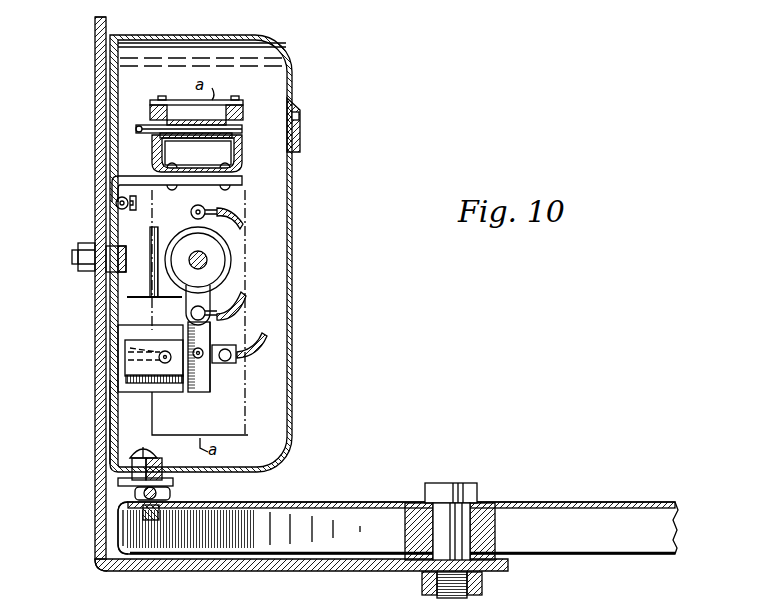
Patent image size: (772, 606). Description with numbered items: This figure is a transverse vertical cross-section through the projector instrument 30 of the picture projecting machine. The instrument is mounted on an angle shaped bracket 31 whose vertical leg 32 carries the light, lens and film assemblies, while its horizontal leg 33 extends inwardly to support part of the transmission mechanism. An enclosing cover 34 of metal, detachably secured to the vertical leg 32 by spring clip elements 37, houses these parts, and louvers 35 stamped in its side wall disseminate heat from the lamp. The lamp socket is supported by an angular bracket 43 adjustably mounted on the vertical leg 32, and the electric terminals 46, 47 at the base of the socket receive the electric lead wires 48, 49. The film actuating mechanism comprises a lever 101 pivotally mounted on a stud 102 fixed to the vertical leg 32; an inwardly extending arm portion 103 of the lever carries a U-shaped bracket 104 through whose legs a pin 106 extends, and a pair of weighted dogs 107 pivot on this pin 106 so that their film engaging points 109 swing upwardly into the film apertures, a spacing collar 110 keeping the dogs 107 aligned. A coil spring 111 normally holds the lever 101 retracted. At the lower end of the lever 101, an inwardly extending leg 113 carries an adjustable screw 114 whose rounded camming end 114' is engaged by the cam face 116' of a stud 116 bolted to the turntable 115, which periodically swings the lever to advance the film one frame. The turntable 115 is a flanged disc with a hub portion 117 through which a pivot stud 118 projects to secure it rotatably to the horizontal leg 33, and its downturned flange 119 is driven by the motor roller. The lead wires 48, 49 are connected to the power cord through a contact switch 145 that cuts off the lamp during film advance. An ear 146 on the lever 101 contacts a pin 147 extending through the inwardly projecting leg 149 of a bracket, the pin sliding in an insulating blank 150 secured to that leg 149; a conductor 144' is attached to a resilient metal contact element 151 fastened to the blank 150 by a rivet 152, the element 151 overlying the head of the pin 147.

The projector instrument 30 is at (342, 182).
The angle shaped bracket 31 is at (100, 575).
The vertical leg 32 is at (100, 314).
The horizontal leg 33 is at (342, 572).
The enclosing cover 34 is at (292, 63).
The louvers 35 is at (300, 148).
The spring clip elements 37 is at (95, 28).
The angular bracket 43 is at (233, 257).
The electric terminal 46 is at (217, 210).
The electric terminal 47 is at (208, 300).
The electric lead wire 48 is at (237, 221).
The electric lead wire 49 is at (245, 292).
The lever 101 is at (112, 410).
The stud 102 is at (77, 258).
The arm portion 103 is at (118, 177).
The U-shaped bracket 104 is at (152, 152).
The pin 106 is at (136, 129).
The weighted dogs 107 is at (150, 118).
The film engaging point 109 is at (160, 97).
The spacing collar 110 is at (218, 148).
The coil spring 111 is at (116, 204).
The inwardly extending leg 113 is at (122, 486).
The screw 114 is at (106, 458).
The rounded camming end 114' is at (102, 530).
The turntable 115 is at (598, 503).
The stud 116 is at (109, 507).
The cam face 116' is at (192, 489).
The hub portion 117 is at (497, 540).
The pivot stud 118 is at (452, 485).
The downturned flange 119 is at (118, 545).
The conductor 144' is at (285, 346).
The contact switch 145 is at (218, 396).
The ear 146 is at (128, 342).
The pin 147 is at (125, 356).
The inwardly projecting leg 149 is at (128, 380).
The insulating blank 150 is at (210, 378).
The resilient metal contact element 151 is at (224, 364).
The rivet 152 is at (202, 350).